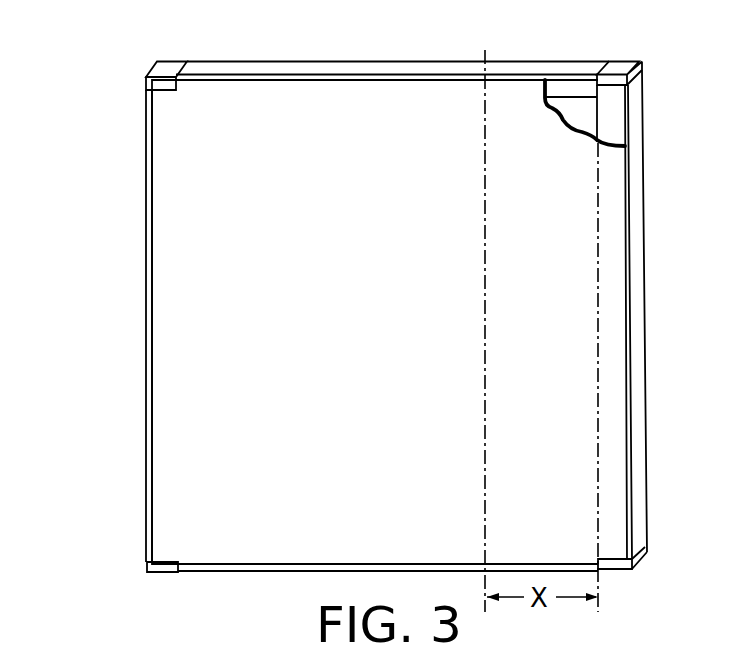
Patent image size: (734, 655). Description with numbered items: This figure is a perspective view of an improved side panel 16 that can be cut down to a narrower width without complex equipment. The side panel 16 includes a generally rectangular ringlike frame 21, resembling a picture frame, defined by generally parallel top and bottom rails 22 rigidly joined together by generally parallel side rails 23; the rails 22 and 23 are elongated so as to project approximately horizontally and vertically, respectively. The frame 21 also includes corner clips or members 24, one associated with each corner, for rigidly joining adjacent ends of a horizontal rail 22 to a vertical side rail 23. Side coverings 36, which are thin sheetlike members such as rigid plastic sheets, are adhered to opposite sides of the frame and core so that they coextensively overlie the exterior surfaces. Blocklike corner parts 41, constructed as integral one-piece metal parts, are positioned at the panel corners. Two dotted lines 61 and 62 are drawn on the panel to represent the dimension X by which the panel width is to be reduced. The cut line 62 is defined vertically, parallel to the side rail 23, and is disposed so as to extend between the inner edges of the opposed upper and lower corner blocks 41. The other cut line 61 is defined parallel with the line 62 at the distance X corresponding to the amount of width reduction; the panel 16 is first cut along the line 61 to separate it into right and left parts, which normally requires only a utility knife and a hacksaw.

The side panel 16 is at (128, 247).
The frame 21 is at (527, 61).
The top and bottom rails 22 is at (421, 64).
The side rails 23 is at (147, 415).
The corner clips 24 is at (170, 63).
The side coverings 36 is at (266, 155).
The corner part 41 is at (161, 572).
The cut line 61 is at (485, 228).
The cut line 62 is at (598, 278).